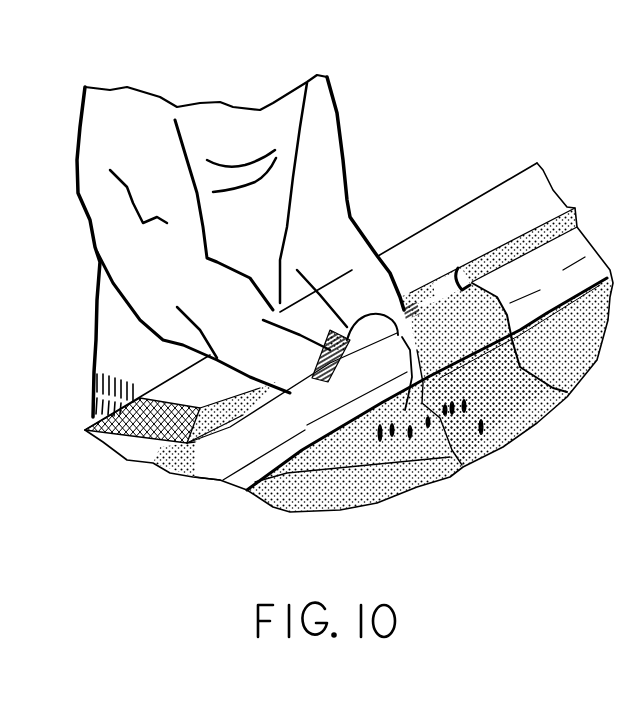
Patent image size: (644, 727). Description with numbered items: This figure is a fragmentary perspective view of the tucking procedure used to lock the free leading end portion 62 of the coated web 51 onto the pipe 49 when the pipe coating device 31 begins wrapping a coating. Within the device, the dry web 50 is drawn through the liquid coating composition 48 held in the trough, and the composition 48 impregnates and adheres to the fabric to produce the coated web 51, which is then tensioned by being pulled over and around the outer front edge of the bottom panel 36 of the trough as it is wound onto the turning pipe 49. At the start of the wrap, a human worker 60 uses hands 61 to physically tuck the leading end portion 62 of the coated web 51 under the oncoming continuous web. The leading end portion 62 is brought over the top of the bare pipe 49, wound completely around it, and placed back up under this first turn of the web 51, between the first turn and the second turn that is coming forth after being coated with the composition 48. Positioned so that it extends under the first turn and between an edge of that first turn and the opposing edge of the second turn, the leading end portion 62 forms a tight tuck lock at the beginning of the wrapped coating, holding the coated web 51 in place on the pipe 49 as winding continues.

The pipe coating device 31 is at (488, 185).
The bottom panel 36 is at (422, 237).
The liquid coating composition 48 is at (537, 228).
The pipe 49 is at (200, 465).
The dry web 50 is at (105, 442).
The coated web 51 is at (388, 478).
The human worker 60 is at (348, 130).
The hands 61 is at (437, 415).
The leading end portion 62 is at (388, 364).